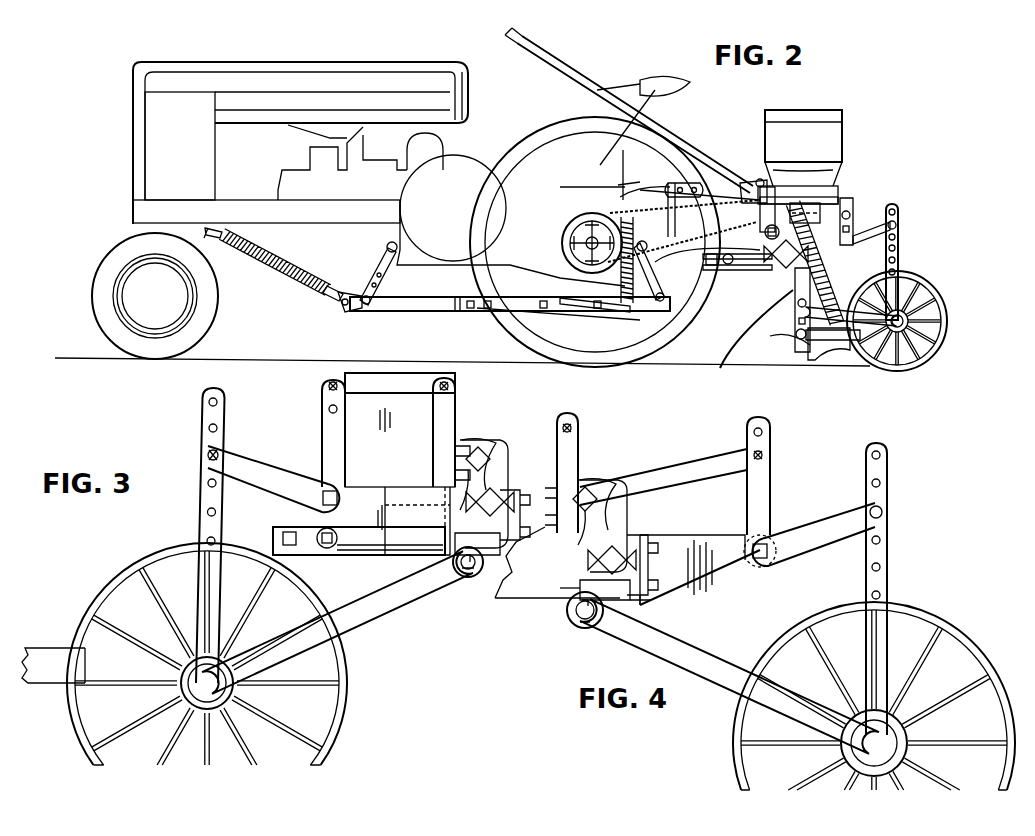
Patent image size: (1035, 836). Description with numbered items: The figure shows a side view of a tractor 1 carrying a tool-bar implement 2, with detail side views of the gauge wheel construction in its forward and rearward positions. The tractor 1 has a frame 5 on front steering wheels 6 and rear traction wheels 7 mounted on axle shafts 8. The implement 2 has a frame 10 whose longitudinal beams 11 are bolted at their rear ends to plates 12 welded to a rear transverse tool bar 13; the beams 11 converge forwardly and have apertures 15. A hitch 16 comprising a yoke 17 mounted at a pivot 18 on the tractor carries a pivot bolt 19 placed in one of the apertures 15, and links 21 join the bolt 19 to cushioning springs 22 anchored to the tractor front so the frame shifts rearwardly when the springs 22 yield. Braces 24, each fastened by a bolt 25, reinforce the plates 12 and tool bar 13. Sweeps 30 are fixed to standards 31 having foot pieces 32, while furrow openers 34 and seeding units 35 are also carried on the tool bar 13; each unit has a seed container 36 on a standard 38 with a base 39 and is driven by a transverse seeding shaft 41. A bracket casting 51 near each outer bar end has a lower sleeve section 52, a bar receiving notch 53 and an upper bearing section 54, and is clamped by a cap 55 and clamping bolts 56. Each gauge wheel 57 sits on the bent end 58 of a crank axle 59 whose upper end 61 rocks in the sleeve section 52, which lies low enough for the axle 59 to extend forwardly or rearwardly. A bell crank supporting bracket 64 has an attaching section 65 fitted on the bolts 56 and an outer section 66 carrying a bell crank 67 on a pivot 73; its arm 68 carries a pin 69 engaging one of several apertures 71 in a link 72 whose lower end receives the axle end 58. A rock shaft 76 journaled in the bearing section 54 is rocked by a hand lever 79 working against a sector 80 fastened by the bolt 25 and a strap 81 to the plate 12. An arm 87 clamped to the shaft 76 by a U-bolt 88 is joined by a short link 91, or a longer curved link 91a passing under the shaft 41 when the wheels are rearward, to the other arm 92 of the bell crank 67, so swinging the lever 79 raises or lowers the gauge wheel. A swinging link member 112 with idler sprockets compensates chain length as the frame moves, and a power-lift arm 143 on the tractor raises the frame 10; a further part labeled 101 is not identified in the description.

In FIG. 2, the tractor 1 is at (118, 119).
In FIG. 2, the implement 2 is at (731, 118).
In FIG. 2, the frame 5 is at (252, 206).
In FIG. 2, the front steering wheels 6 is at (105, 290).
In FIG. 2, the rear traction wheels 7 is at (525, 150).
In FIG. 2, the axle shafts 8 is at (580, 238).
In FIG. 2, the frame 10 is at (543, 318).
In FIG. 3, the frame 10 is at (51, 637).
In FIG. 2, the beams 11 is at (440, 309).
In FIG. 3, the beams 11 is at (48, 675).
In FIG. 2, the plates 12 is at (719, 262).
In FIG. 3, the plates 12 is at (300, 548).
In FIG. 4, the plates 12 is at (512, 605).
In FIG. 2, the tool bar 13 is at (787, 262).
In FIG. 3, the tool bar 13 is at (495, 490).
In FIG. 4, the tool bar 13 is at (614, 548).
In FIG. 2, the apertures 15 is at (358, 310).
In FIG. 2, the hitch 16 is at (283, 273).
In FIG. 2, the yoke 17 is at (374, 274).
In FIG. 2, the pivot 18 is at (390, 243).
In FIG. 2, the pivot bolt 19 is at (366, 305).
In FIG. 2, the links 21 is at (333, 297).
In FIG. 2, the cushioning springs 22 is at (220, 240).
In FIG. 2, the braces 24 is at (742, 272).
In FIG. 3, the braces 24 is at (380, 550).
In FIG. 4, the braces 24 is at (570, 595).
In FIG. 2, the bolt 25 is at (725, 257).
In FIG. 2, the sweeps 30 is at (760, 358).
In FIG. 2, the standards 31 is at (790, 313).
In FIG. 2, the foot pieces 32 is at (796, 334).
In FIG. 2, the furrow openers 34 is at (820, 366).
In FIG. 2, the seeding units 35 is at (856, 156).
In FIG. 2, the seed container 36 is at (808, 110).
In FIG. 2, the standard 38 is at (770, 245).
In FIG. 2, the plate or base 39 is at (783, 190).
In FIG. 2, the seeding shaft 41 is at (800, 196).
In FIG. 3, the bracket casting 51 is at (498, 470).
In FIG. 4, the bracket casting 51 is at (620, 508).
In FIG. 3, the sleeve section 52 is at (462, 577).
In FIG. 4, the sleeve section 52 is at (570, 618).
In FIG. 3, the bar receiving notch 53 is at (455, 538).
In FIG. 4, the bar receiving notch 53 is at (580, 574).
In FIG. 3, the bearing section 54 is at (475, 445).
In FIG. 4, the bearing section 54 is at (590, 495).
In FIG. 3, the cap 55 is at (508, 508).
In FIG. 4, the cap 55 is at (636, 540).
In FIG. 3, the clamping bolts 56 is at (525, 537).
In FIG. 4, the clamping bolts 56 is at (655, 582).
In FIG. 2, the gauge wheel 57 is at (947, 321).
In FIG. 3, the gauge wheel 57 is at (170, 558).
In FIG. 4, the gauge wheel 57 is at (950, 635).
In FIG. 3, the laterally bent end 58 is at (238, 692).
In FIG. 4, the laterally bent end 58 is at (890, 740).
In FIG. 3, the gauge wheel crank axle 59 is at (351, 592).
In FIG. 4, the gauge wheel crank axle 59 is at (718, 652).
In FIG. 3, the upper end 61 is at (472, 572).
In FIG. 4, the upper end 61 is at (586, 620).
In FIG. 2, the bell crank supporting bracket 64 is at (841, 257).
In FIG. 3, the bell crank supporting bracket 64 is at (399, 475).
In FIG. 4, the bell crank supporting bracket 64 is at (712, 522).
In FIG. 3, the attaching section 65 is at (444, 505).
In FIG. 4, the attaching section 65 is at (640, 600).
In FIG. 3, the bell crank receiving section 66 is at (340, 545).
In FIG. 4, the bell crank receiving section 66 is at (737, 566).
In FIG. 3, the bell crank 67 is at (310, 457).
In FIG. 4, the bell crank 67 is at (781, 506).
In FIG. 2, the arm 68 is at (866, 236).
In FIG. 3, the arm 68 is at (255, 476).
In FIG. 4, the arm 68 is at (820, 527).
In FIG. 2, the pin 69 is at (898, 227).
In FIG. 3, the pin 69 is at (206, 455).
In FIG. 4, the pin 69 is at (884, 512).
In FIG. 2, the apertures 71 is at (898, 252).
In FIG. 3, the apertures 71 is at (208, 404).
In FIG. 4, the apertures 71 is at (882, 538).
In FIG. 2, the link 72 is at (900, 270).
In FIG. 3, the link 72 is at (200, 494).
In FIG. 4, the link 72 is at (885, 576).
In FIG. 3, the pivot 73 is at (336, 492).
In FIG. 4, the pivot 73 is at (772, 562).
In FIG. 3, the rock shaft 76 is at (462, 455).
In FIG. 4, the rock shaft 76 is at (585, 490).
In FIG. 2, the hand lever 79 is at (560, 72).
In FIG. 2, the sector 80 is at (748, 185).
In FIG. 2, the strap 81 is at (758, 180).
In FIG. 3, the arm 87 is at (435, 404).
In FIG. 4, the arm 87 is at (580, 470).
In FIG. 3, the U-bolt 88 is at (490, 440).
In FIG. 4, the U-bolt 88 is at (605, 495).
In FIG. 3, the link 91 is at (376, 386).
In FIG. 2, the longer links 91a is at (848, 205).
In FIG. 4, the longer links 91a is at (688, 460).
In FIG. 2, the arm 92 is at (852, 218).
In FIG. 3, the arm 92 is at (322, 390).
In FIG. 2, the drive chain 101 is at (570, 262).
In FIG. 2, the link member 112 is at (660, 300).
In FIG. 2, the power-lift arm 143 is at (627, 178).